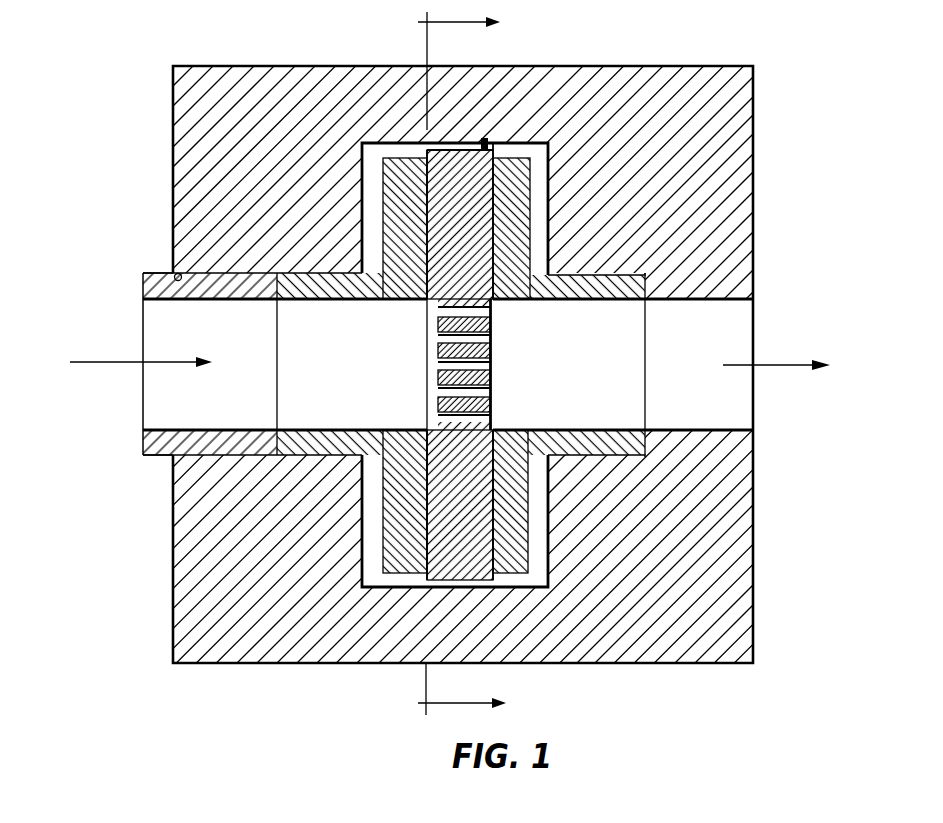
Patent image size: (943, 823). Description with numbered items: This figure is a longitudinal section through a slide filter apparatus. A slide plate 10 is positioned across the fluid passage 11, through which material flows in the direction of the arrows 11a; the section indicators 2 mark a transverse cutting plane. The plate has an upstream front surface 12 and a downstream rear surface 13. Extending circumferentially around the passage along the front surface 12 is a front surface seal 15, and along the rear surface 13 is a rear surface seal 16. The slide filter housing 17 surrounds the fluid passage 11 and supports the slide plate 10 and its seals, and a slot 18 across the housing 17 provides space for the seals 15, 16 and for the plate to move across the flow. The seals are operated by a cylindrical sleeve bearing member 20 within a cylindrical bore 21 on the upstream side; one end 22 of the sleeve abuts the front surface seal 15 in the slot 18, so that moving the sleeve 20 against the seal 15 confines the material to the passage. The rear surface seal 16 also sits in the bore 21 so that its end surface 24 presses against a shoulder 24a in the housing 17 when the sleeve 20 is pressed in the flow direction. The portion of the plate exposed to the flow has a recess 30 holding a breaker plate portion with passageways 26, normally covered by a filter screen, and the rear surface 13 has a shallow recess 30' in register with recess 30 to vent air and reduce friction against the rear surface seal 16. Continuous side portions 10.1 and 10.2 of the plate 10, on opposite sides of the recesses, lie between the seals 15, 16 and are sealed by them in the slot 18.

The section line 2- 2 is at (469, 364).
The slide plate 10 is at (485, 140).
The continuous side portion 10.1 is at (456, 212).
The continuous side portion 10.2 is at (458, 535).
The fluid passage 11 is at (143, 325).
The arrows 11a is at (96, 362).
The front surface 12 is at (427, 470).
The rear surface 13 is at (493, 497).
The front surface seal 15 is at (405, 158).
The rear surface seal 16 is at (523, 158).
The slide filter housing 17 is at (240, 66).
The slot 18 is at (548, 240).
The cylindrical sleeve bearing member 20 is at (143, 273).
The cylindrical bore 21 is at (174, 279).
The end of the sleeve 22 is at (281, 279).
The end surface 24 is at (647, 286).
The shoulder 24a is at (634, 440).
The passageways 26 is at (486, 391).
The recess 30 is at (410, 411).
The shallow recess 30' is at (533, 412).